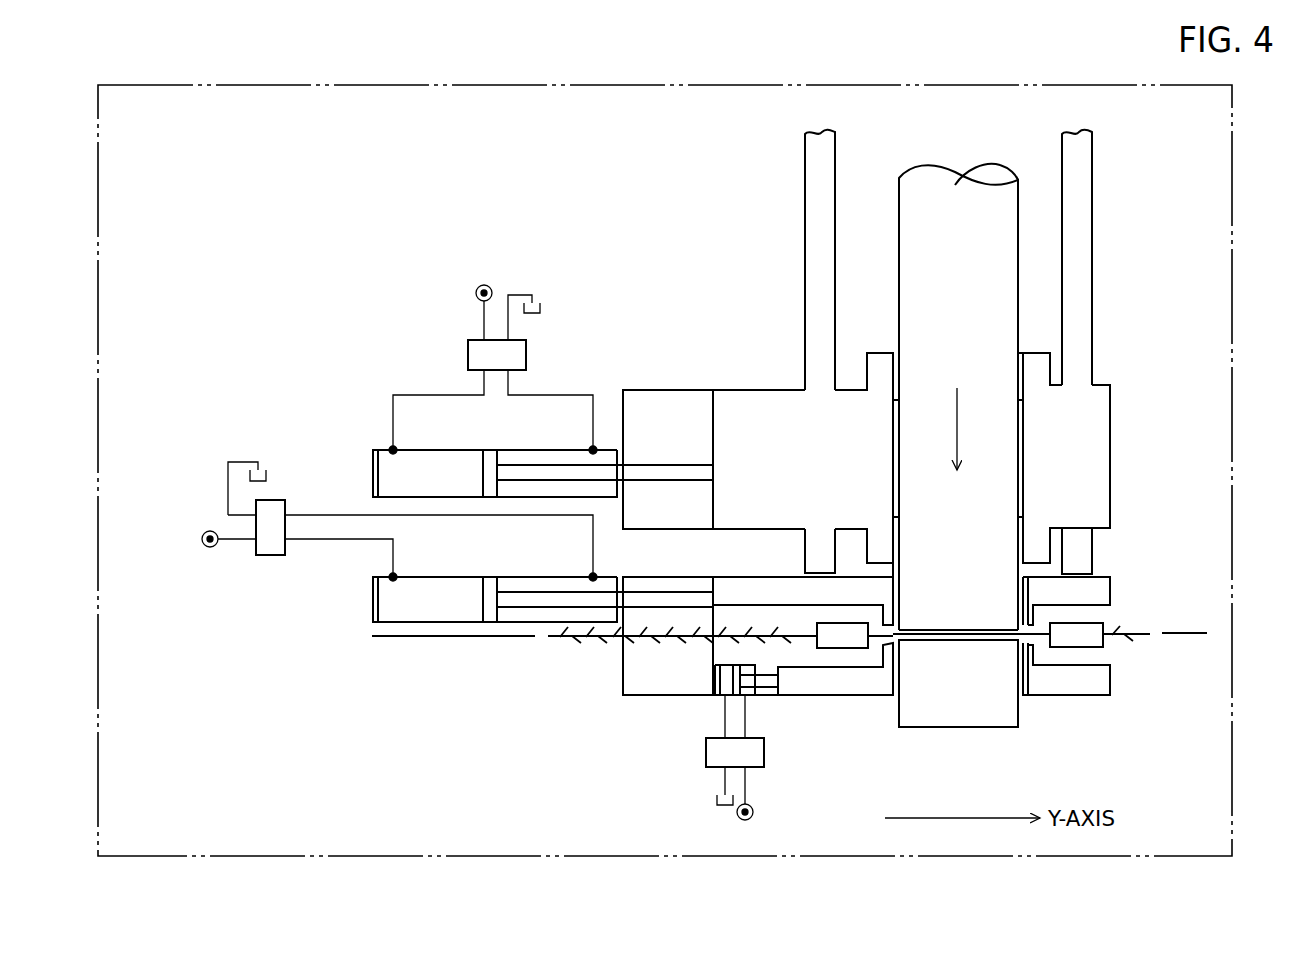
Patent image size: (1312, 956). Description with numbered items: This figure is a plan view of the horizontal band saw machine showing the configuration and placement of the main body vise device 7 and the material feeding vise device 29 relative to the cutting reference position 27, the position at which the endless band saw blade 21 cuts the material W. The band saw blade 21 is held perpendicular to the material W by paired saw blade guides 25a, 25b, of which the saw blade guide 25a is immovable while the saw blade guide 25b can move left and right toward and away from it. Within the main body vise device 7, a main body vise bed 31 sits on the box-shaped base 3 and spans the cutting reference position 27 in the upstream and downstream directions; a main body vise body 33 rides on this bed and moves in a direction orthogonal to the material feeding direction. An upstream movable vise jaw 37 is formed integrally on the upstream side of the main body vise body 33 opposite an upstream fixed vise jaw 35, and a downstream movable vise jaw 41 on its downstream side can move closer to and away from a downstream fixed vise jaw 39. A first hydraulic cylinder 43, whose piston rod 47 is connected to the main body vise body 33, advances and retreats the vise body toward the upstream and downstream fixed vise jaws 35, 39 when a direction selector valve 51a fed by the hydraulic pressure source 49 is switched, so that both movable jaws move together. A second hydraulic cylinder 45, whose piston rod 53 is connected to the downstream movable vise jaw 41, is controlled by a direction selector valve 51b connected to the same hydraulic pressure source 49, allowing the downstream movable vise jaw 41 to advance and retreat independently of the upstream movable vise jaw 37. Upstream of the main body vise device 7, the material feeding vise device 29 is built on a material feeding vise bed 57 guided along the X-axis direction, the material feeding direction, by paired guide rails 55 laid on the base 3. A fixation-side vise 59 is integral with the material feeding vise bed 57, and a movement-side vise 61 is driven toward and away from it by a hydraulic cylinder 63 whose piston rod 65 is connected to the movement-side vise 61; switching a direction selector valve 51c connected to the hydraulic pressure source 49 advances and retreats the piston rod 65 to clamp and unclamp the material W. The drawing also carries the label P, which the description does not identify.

The base 3 is at (663, 85).
The main body vise device 7 is at (710, 642).
The band saw blade 21 is at (562, 635).
The saw blade guide 25a is at (1090, 645).
The saw blade guide 25b is at (847, 646).
The cutting reference position 27 is at (393, 640).
The material feeding vise device 29 is at (751, 450).
The main body vise bed 31 is at (665, 616).
The main body vise body 33 is at (728, 614).
The upstream fixed vise jaw 35 is at (1103, 596).
The upstream movable vise jaw 37 is at (758, 592).
The downstream fixed vise jaw 39 is at (1062, 700).
The downstream movable vise jaw 41 is at (838, 690).
The first hydraulic cylinder 43 is at (372, 597).
The second hydraulic cylinder 45 is at (717, 663).
The piston rod 47 is at (531, 599).
The hydraulic pressure source 49 is at (485, 285).
The direction selector valve 51a is at (265, 556).
The direction selector valve 51b is at (706, 757).
The direction selector valve 51c is at (468, 358).
The piston rod 53 is at (767, 686).
The guide rails 55 is at (804, 183).
The material feeding vise bed 57 is at (668, 398).
The fixation-side vise 59 is at (1100, 446).
The movement-side vise 61 is at (767, 397).
The hydraulic cylinder 63 is at (372, 452).
The piston rod 65 is at (650, 472).
The material W is at (930, 178).
The cut product P is at (960, 727).